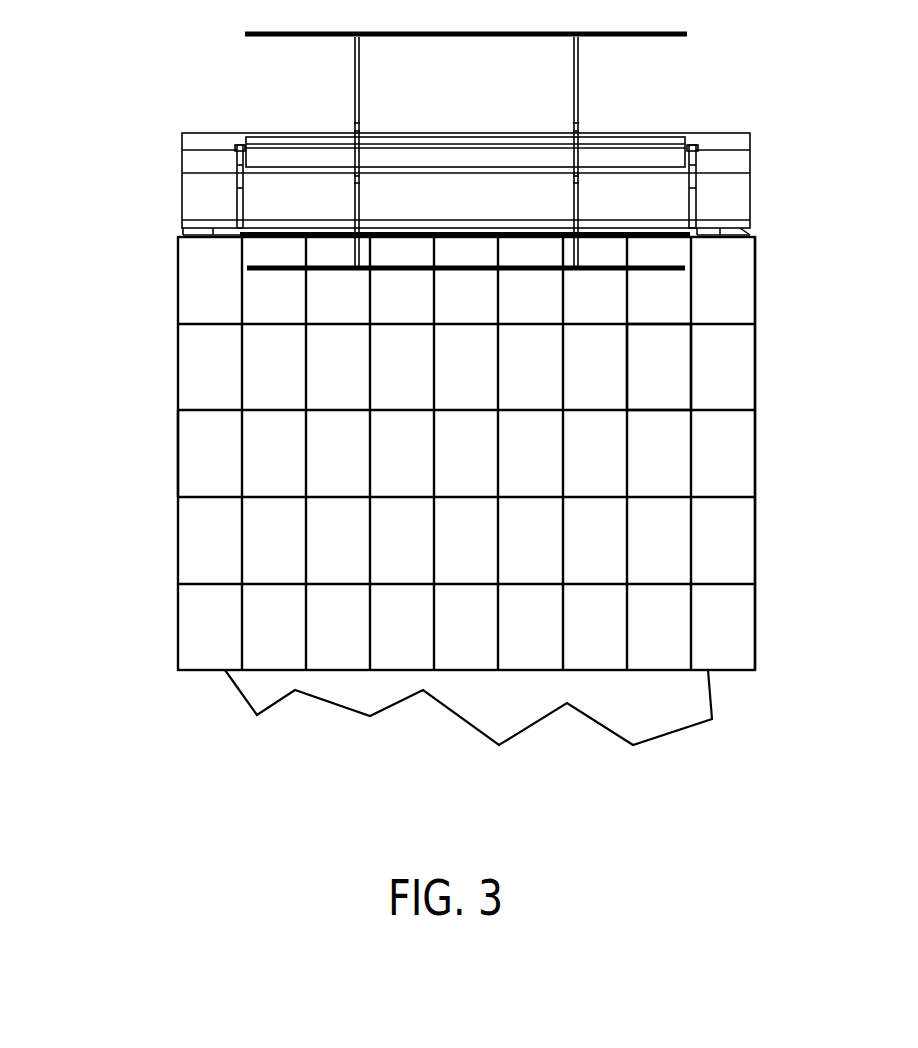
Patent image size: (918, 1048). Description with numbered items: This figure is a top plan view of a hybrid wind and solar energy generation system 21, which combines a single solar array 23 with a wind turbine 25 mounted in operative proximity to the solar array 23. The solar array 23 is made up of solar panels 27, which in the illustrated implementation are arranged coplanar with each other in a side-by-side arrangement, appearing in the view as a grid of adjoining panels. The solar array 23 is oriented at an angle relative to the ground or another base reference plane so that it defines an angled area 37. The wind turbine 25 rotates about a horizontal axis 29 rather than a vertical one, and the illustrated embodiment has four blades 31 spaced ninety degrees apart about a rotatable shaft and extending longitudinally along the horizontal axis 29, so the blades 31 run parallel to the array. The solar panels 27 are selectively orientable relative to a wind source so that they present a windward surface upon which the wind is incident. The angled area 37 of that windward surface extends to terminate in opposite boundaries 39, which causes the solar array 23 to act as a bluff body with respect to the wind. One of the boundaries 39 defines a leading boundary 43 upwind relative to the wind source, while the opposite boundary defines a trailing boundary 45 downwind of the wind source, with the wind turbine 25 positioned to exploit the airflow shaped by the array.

The hybrid wind and solar energy generation system 21 is at (120, 186).
The solar array 23 is at (168, 394).
The wind turbine 25 is at (225, 33).
The solar panels 27 is at (187, 462).
The horizontal axis 29 is at (691, 143).
The blades 31 is at (265, 150).
The angled area 37 is at (668, 377).
The boundaries 39 is at (770, 217).
The leading boundary 43 is at (203, 672).
The trailing boundary 45 is at (192, 228).